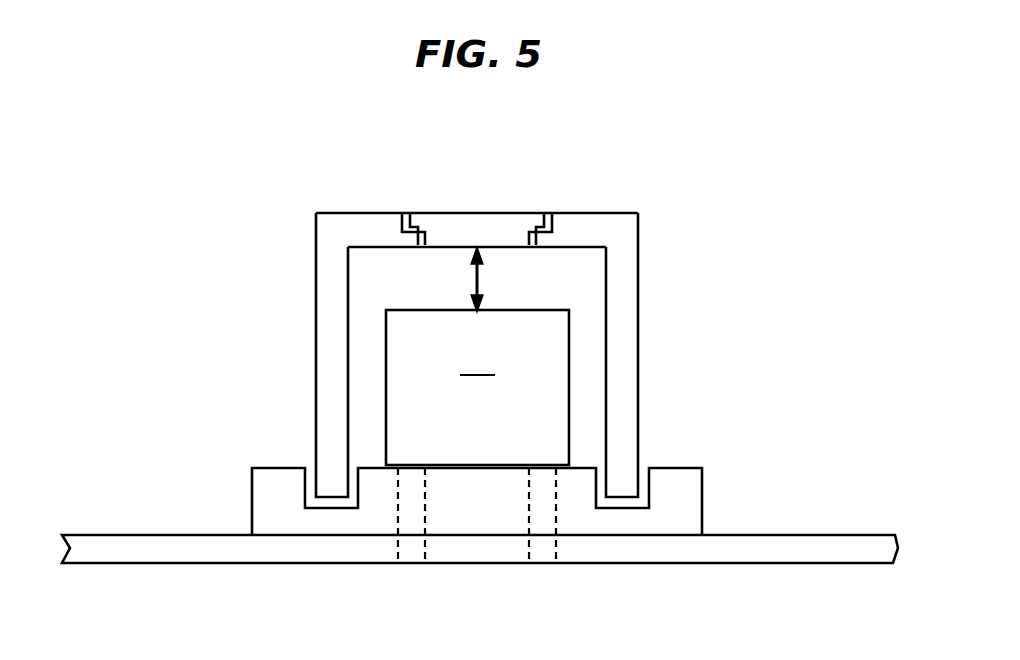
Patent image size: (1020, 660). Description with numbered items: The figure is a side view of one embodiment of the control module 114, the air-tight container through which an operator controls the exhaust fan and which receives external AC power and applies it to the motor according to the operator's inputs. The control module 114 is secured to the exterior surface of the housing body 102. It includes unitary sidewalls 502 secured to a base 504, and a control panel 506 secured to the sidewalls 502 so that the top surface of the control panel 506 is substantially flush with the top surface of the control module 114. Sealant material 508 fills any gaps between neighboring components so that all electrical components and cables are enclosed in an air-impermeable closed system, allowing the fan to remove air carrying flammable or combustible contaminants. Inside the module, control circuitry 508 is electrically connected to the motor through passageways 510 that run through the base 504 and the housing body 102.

The control module 114 is at (745, 190).
The sidewalls 502 is at (627, 311).
The base 504 is at (697, 510).
The control panel 506 is at (482, 223).
The control circuitry 508 is at (403, 212).
The passageways 510 is at (412, 552).
The housing body 102 is at (823, 552).